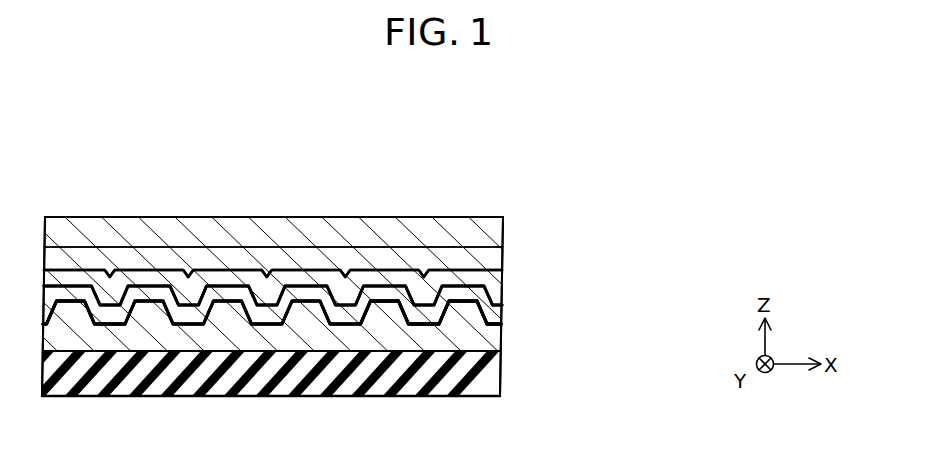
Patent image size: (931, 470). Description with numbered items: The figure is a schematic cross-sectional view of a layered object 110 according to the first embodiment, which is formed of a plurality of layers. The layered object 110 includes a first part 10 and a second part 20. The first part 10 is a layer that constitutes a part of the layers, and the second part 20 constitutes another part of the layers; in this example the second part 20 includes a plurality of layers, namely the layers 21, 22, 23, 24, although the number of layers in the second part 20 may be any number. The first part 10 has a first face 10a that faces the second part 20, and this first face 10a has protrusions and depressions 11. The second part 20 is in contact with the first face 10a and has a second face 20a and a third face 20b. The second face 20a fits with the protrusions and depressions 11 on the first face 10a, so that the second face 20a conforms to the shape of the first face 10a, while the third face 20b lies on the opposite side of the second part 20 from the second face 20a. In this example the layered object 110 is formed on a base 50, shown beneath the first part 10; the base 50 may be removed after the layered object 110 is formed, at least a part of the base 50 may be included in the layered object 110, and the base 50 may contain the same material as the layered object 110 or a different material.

The layered object 110 is at (672, 224).
The first part 10 is at (477, 334).
The first face 10a is at (448, 324).
The protrusions and depressions 11 is at (73, 303).
The second part 20 is at (563, 205).
The second face 20a is at (448, 324).
The third face 20b is at (387, 221).
The layer 21 is at (492, 313).
The layer 22 is at (487, 277).
The layer 23 is at (480, 259).
The layer 24 is at (480, 229).
The base 50 is at (493, 373).